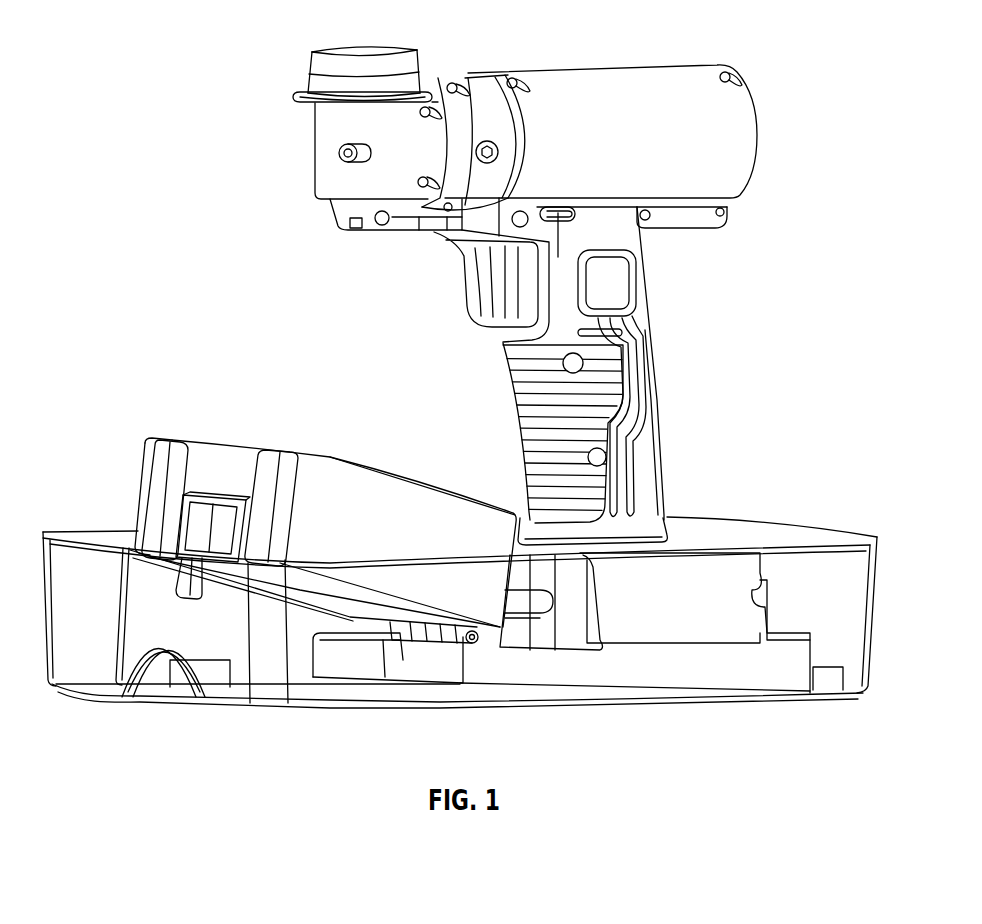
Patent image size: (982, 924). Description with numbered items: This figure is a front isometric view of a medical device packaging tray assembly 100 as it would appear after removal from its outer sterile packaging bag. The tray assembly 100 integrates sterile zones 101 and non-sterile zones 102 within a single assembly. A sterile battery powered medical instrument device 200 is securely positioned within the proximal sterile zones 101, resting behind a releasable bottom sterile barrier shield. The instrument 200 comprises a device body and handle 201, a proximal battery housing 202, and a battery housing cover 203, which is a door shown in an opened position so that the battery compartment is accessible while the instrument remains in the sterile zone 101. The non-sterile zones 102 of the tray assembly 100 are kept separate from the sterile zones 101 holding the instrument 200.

The medical device packaging tray assembly 100 is at (778, 712).
The sterile zone 101 is at (778, 538).
The non-sterile zone 102 is at (617, 667).
The sterile battery powered medical instrument device 200 is at (133, 34).
The device body and handle 201 is at (648, 347).
The proximal battery housing 202 is at (680, 543).
The battery housing cover 203 is at (205, 440).